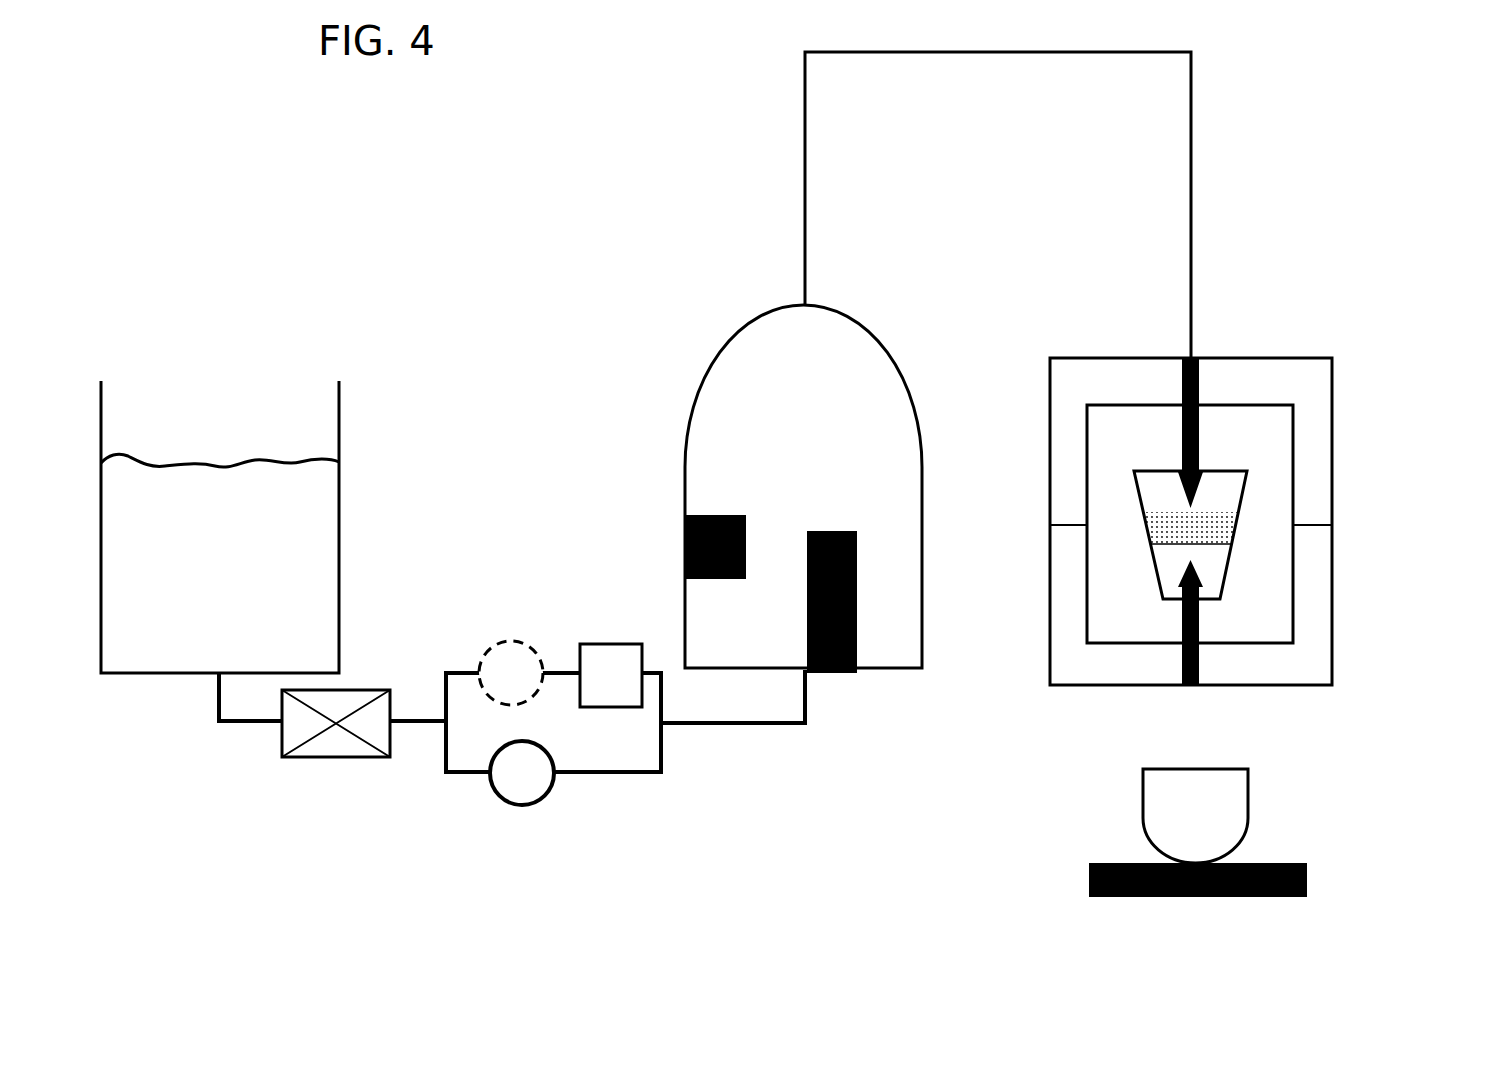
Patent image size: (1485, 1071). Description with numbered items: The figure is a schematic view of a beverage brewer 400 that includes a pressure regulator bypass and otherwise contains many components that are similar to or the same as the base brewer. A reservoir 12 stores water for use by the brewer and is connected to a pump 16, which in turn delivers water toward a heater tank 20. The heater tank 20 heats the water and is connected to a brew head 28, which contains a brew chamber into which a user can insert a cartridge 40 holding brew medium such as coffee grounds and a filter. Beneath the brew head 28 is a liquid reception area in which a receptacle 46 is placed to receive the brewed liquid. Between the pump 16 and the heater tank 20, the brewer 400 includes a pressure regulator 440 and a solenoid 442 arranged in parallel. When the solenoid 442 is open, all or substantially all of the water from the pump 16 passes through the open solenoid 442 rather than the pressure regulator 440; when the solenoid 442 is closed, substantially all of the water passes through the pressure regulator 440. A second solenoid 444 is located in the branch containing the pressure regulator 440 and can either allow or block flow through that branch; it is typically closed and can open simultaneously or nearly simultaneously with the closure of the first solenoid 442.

The brewer 400 is at (360, 166).
The reservoir 12 is at (101, 411).
The pump 16 is at (348, 755).
The second solenoid 444 is at (511, 641).
The pressure regulator 440 is at (613, 644).
The solenoid 442 is at (525, 805).
The heater tank 20 is at (700, 388).
The brew head 28 is at (1280, 359).
The cartridge 40 is at (1242, 498).
The receptacle 46 is at (1248, 808).